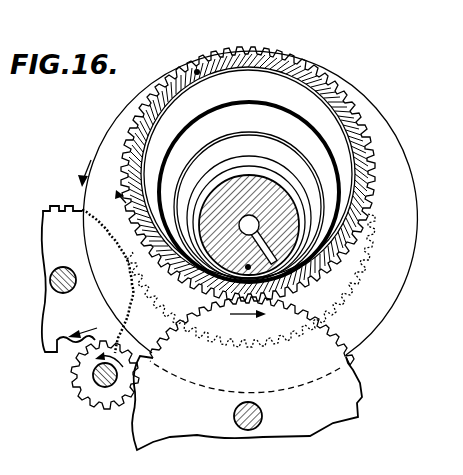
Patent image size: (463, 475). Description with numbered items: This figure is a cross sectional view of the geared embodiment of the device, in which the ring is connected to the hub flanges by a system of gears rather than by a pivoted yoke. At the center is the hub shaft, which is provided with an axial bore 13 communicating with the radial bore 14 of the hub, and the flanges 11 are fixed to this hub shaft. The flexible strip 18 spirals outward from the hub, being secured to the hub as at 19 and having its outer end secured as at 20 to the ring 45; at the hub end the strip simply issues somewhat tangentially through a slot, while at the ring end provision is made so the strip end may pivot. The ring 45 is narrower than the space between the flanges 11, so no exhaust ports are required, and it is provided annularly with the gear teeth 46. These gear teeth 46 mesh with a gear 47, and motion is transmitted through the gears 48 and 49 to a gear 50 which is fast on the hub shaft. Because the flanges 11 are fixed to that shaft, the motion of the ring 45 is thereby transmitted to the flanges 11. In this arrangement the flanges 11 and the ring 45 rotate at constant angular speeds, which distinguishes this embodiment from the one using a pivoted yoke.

The flanges 11 is at (101, 150).
The axial bore 13 is at (248, 214).
The radial bore 14 is at (260, 245).
The flexible strip 18 is at (225, 132).
The strip securing point at hub 19 is at (246, 264).
The strip securing point at ring 20 is at (198, 74).
The ring 45 is at (312, 69).
The gear teeth 46 is at (284, 53).
The gear 47 is at (341, 392).
The gear 48 is at (99, 387).
The gear 49 is at (62, 350).
The gear 50 is at (333, 303).